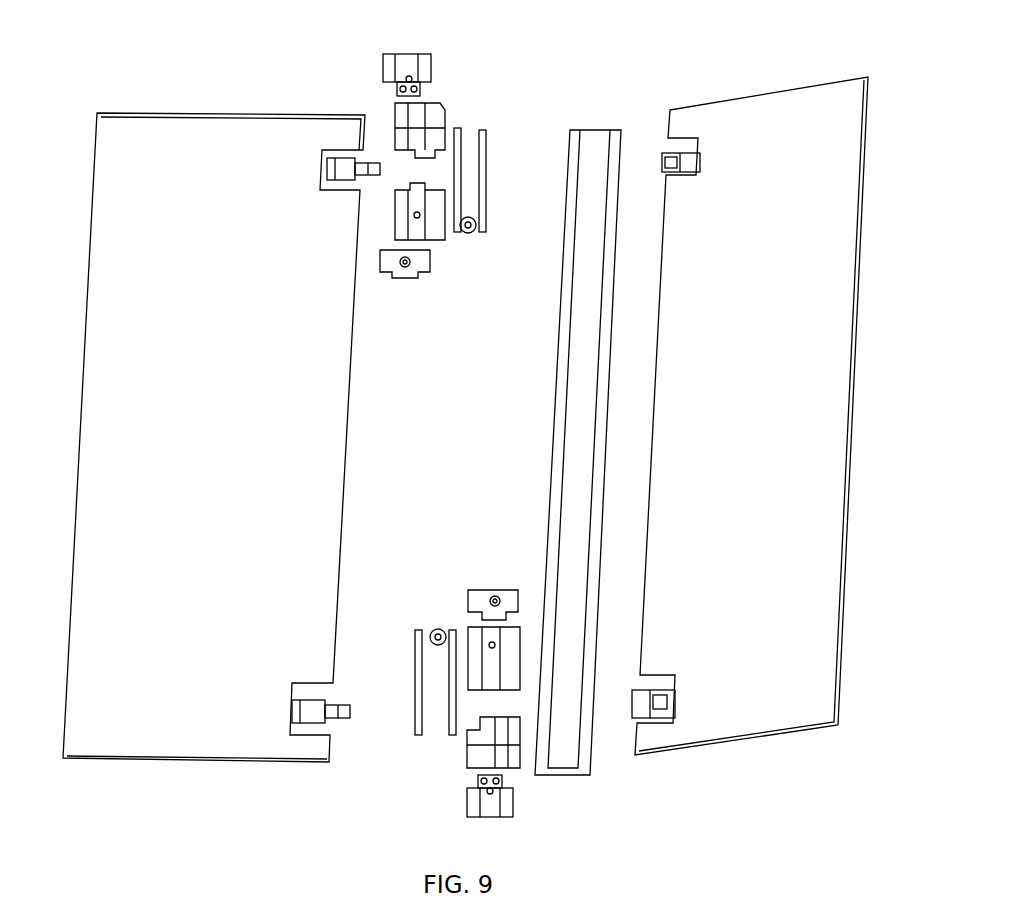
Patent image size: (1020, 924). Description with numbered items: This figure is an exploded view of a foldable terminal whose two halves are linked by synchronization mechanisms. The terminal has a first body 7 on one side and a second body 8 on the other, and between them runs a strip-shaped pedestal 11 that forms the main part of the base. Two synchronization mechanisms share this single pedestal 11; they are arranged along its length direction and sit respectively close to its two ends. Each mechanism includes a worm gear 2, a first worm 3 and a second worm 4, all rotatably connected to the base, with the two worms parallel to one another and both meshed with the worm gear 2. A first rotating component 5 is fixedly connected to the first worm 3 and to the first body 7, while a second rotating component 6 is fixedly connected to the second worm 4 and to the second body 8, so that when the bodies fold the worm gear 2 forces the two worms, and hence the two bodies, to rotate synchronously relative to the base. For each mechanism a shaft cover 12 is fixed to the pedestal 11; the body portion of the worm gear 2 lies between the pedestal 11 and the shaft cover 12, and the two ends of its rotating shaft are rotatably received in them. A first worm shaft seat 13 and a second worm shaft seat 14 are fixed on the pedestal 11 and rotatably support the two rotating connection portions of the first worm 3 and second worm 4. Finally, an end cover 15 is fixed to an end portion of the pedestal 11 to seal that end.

The worm gear 2 is at (472, 220).
The first worm 3 is at (462, 165).
The second worm 4 is at (483, 200).
The first rotating component 5 is at (350, 170).
The second rotating component 6 is at (689, 155).
The first body 7 is at (145, 512).
The second body 8 is at (773, 553).
The pedestal 11 is at (584, 135).
The shaft cover 12 is at (407, 265).
The first worm shaft seat 13 is at (417, 215).
The second worm shaft seat 14 is at (418, 118).
The end cover 15 is at (418, 68).